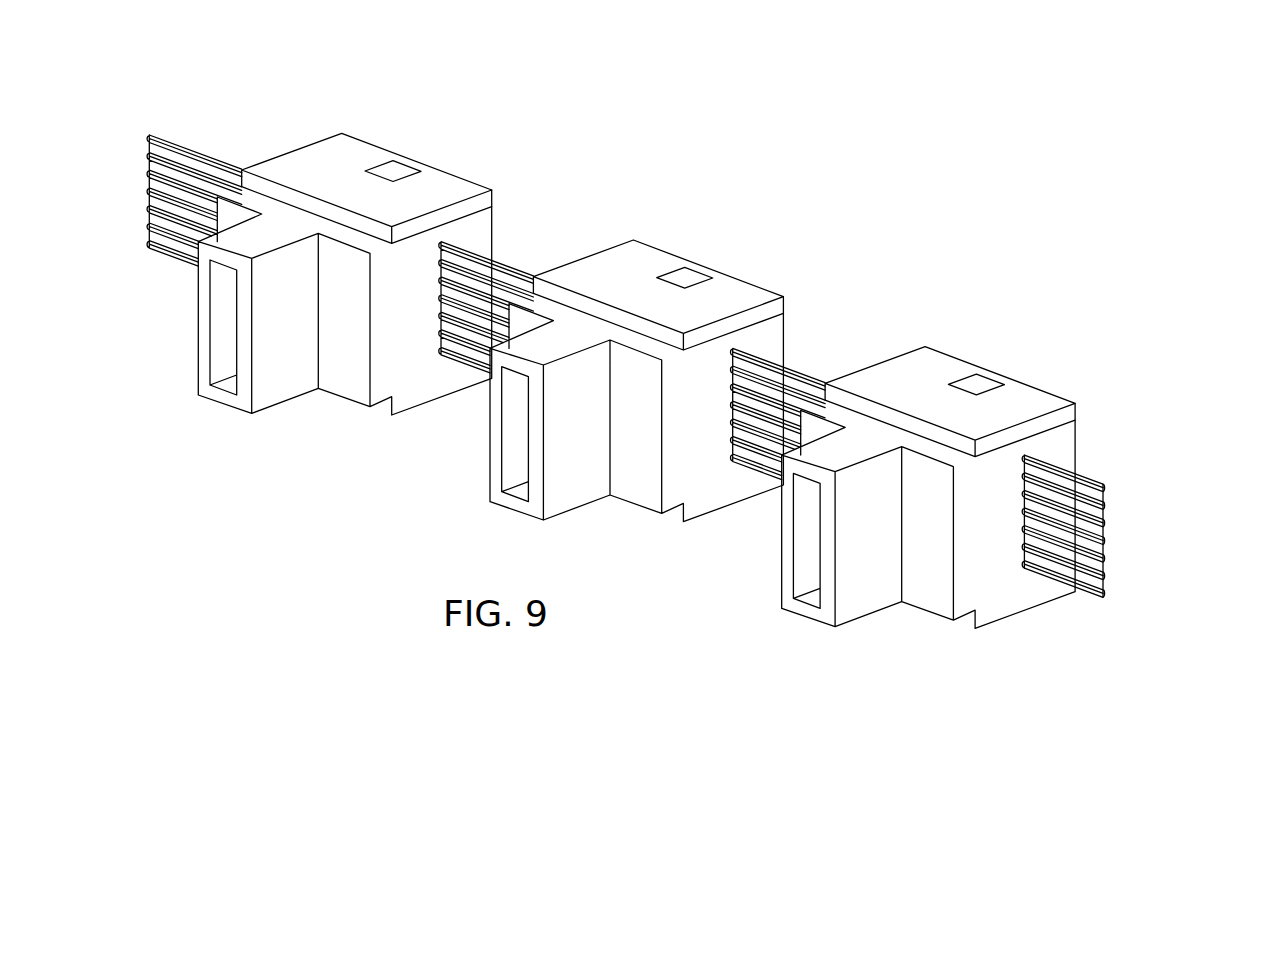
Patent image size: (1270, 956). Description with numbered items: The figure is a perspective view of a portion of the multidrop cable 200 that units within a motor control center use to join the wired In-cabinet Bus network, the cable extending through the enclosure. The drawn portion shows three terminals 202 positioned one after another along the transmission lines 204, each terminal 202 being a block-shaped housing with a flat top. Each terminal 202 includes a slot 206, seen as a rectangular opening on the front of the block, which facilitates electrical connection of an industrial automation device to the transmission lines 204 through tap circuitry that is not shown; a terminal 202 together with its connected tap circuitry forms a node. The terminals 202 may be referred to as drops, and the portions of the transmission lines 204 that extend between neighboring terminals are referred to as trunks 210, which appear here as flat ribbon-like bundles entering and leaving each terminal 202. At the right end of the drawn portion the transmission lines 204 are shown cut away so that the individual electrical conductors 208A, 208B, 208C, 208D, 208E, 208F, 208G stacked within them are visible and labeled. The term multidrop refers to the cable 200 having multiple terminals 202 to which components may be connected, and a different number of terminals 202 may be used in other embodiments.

The multidrop cable 200 is at (769, 146).
The terminal 202 is at (420, 405).
The transmission lines 204 is at (213, 153).
The slot 206 is at (220, 355).
The electrical conductor 208A is at (1104, 485).
The electrical conductor 208B is at (1104, 503).
The electrical conductor 208C is at (1104, 522).
The electrical conductor 208D is at (1104, 540).
The electrical conductor 208E is at (1104, 553).
The electrical conductor 208F is at (1104, 572).
The electrical conductor 208G is at (1104, 592).
The trunk 210 is at (705, 352).